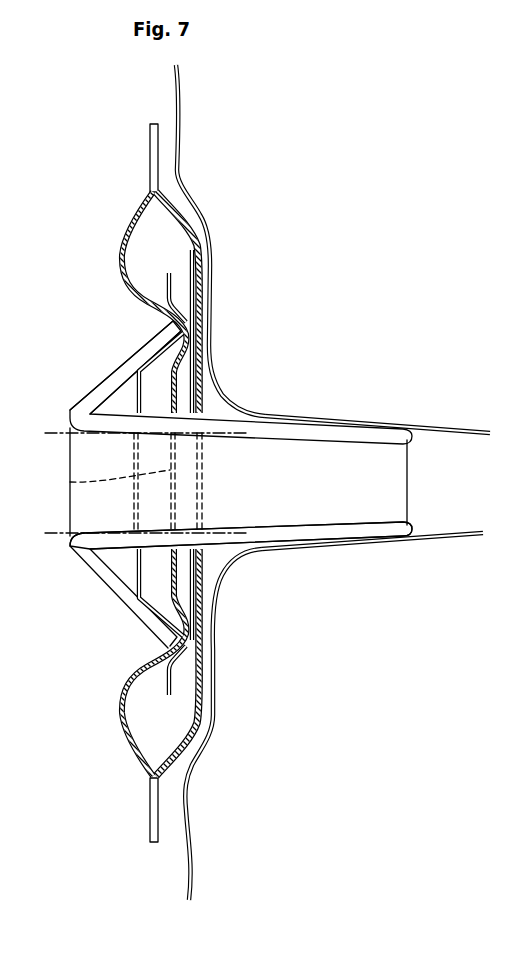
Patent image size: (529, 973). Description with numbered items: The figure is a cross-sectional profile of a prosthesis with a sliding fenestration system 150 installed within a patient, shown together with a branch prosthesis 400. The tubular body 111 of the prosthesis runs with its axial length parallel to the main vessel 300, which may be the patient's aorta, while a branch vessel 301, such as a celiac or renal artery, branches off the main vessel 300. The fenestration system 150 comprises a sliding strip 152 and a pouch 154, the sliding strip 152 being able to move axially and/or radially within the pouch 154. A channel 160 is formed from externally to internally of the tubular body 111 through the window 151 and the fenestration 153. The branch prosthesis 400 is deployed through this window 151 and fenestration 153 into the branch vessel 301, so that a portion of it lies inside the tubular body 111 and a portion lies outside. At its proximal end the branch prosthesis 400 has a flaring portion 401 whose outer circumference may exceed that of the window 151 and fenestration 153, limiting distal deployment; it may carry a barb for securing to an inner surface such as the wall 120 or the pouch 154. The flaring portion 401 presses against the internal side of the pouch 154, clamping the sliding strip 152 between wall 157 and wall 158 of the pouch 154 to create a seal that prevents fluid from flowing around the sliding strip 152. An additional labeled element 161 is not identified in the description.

The tubular body 111 is at (148, 147).
The wall 120 is at (150, 822).
The fenestration system 150 is at (123, 222).
The window 151 is at (140, 393).
The sliding strip 152 is at (163, 277).
The fenestration 153 is at (67, 481).
The pouch 154 is at (123, 708).
The wall 157 is at (130, 708).
The wall 158 is at (187, 688).
The channel 160 is at (200, 637).
The vertical wall strip 161 is at (202, 312).
The main vessel 300 is at (182, 108).
The branch vessel 301 is at (406, 423).
The branch prosthesis 400 is at (340, 443).
The flaring portion 401 is at (100, 387).